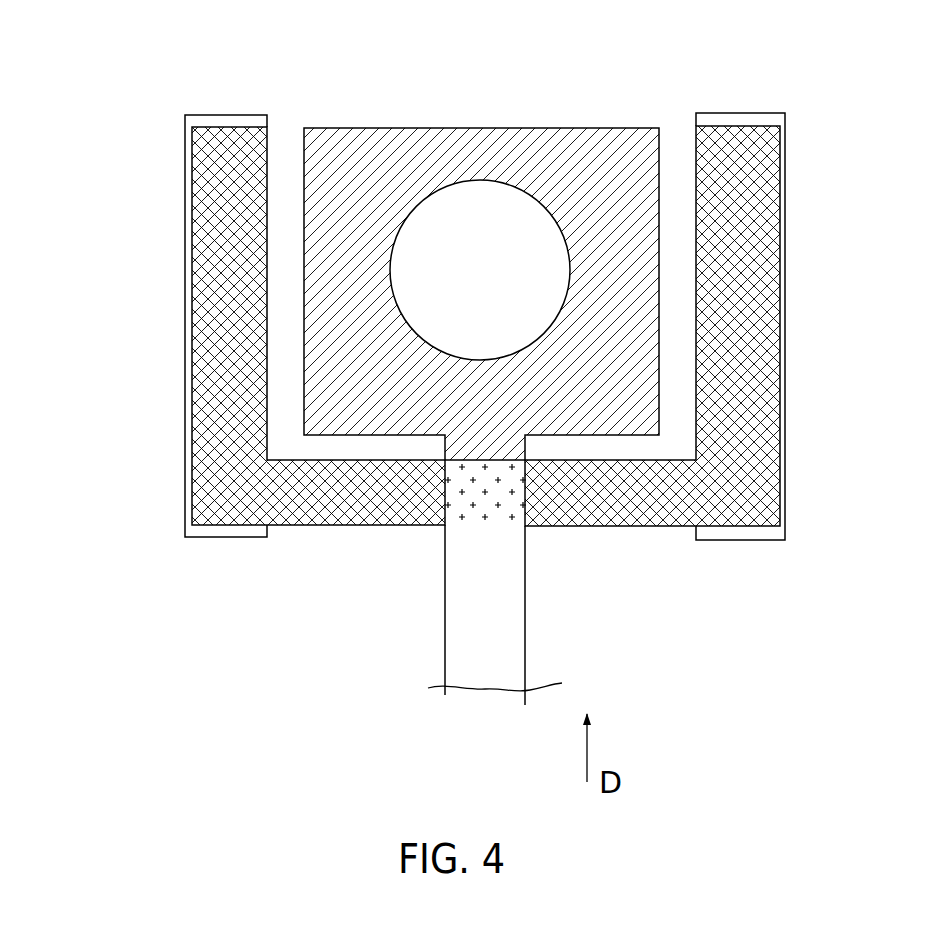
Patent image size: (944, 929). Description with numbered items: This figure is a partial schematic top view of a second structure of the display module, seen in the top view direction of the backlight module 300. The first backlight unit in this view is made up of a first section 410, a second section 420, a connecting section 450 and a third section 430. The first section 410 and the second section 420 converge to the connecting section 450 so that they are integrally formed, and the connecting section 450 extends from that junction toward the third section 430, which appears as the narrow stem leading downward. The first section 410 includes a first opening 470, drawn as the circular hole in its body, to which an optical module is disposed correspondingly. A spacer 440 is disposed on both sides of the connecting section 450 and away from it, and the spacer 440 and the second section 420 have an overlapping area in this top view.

The backlight module 300 is at (137, 70).
The first section 410 is at (448, 158).
The second section 420 is at (215, 293).
The third section 430 is at (477, 587).
The spacer 440 is at (257, 528).
The connecting section 450 is at (488, 493).
The first opening 470 is at (497, 243).